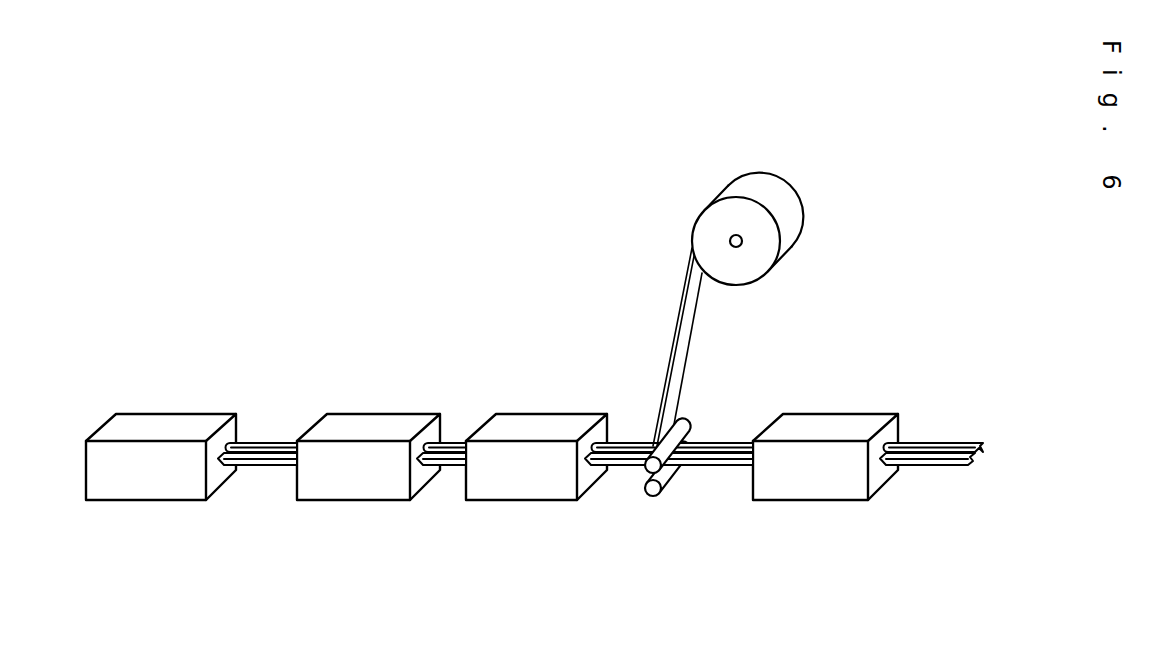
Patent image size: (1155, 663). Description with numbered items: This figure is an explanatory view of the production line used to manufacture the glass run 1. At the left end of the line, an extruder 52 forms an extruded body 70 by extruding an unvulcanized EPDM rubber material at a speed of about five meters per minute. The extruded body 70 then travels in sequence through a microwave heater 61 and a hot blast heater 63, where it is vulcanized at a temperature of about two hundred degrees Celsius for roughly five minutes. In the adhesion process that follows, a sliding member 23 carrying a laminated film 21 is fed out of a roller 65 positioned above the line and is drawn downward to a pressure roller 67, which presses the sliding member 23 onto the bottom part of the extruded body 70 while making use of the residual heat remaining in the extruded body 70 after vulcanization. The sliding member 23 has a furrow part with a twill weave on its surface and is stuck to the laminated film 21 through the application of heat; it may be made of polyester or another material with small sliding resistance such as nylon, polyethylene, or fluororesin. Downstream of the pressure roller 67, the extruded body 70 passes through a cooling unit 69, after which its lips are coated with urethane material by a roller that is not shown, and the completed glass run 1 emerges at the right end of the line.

The glass run 1 is at (930, 466).
The laminated film 21 is at (662, 335).
The sliding member 23 is at (691, 323).
The extruder 52 is at (174, 422).
The microwave heater 61 is at (363, 490).
The hot blast heater 63 is at (528, 492).
The roller 65 is at (790, 242).
The pressure roller 67 is at (656, 497).
The cooling unit 69 is at (817, 490).
The extruded body 70 is at (258, 462).